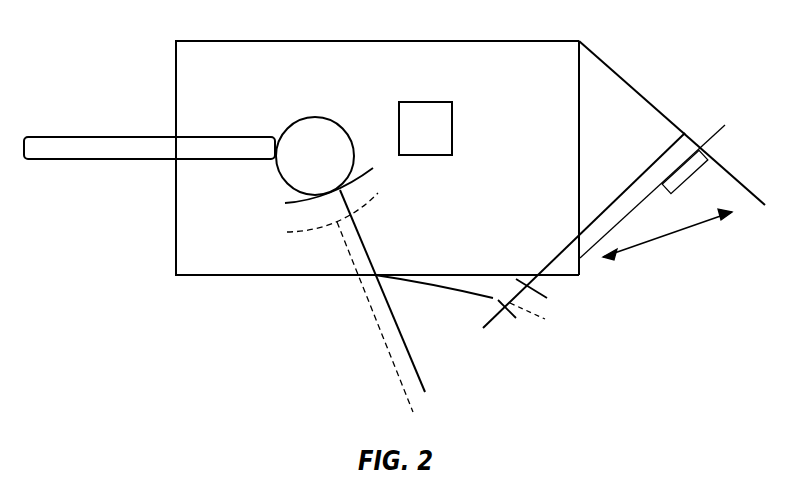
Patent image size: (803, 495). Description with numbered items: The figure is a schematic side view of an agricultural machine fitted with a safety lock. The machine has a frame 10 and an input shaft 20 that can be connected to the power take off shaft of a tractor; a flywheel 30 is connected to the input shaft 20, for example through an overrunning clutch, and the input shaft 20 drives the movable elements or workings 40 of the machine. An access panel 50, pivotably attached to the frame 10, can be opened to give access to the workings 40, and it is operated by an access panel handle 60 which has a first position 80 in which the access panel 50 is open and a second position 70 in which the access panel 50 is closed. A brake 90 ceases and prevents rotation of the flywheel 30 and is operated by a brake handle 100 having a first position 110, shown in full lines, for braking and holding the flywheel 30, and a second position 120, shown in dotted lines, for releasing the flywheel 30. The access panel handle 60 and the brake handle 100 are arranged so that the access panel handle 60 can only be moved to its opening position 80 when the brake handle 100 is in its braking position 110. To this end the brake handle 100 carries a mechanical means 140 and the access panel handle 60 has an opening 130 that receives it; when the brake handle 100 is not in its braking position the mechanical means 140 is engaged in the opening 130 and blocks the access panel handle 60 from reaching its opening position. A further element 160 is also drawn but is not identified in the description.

The frame 10 is at (270, 41).
The input shaft 20 is at (118, 137).
The flywheel 30 is at (318, 117).
The workings 40 is at (421, 101).
The access panel 50 is at (580, 140).
The access panel handle 60 is at (560, 252).
The second position 70 is at (619, 254).
The first position 80 is at (716, 220).
The brake 90 is at (373, 168).
The brake handle 100 is at (370, 301).
The first position 110 is at (285, 203).
The second position 120 is at (293, 234).
The opening 130 is at (504, 299).
The mechanical means 140 is at (435, 283).
The sensor 160 is at (683, 173).